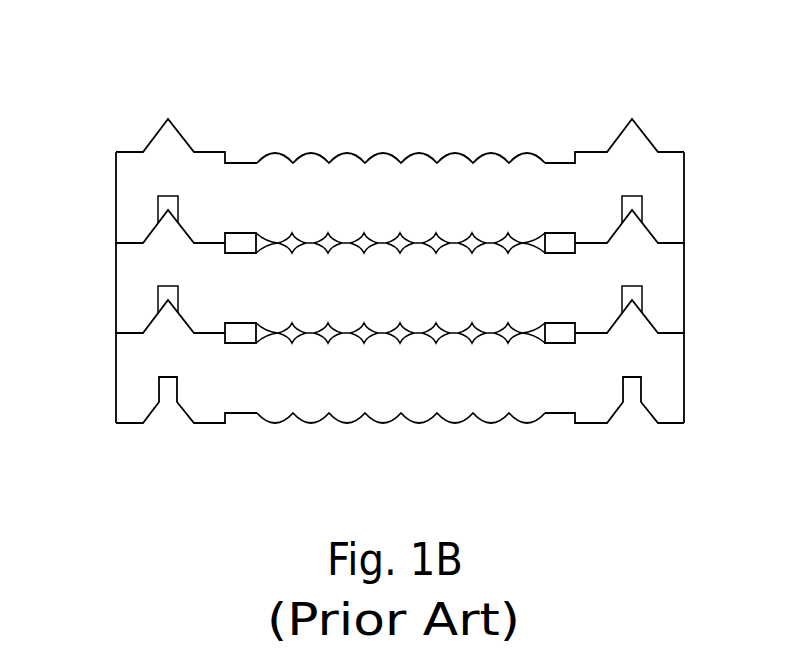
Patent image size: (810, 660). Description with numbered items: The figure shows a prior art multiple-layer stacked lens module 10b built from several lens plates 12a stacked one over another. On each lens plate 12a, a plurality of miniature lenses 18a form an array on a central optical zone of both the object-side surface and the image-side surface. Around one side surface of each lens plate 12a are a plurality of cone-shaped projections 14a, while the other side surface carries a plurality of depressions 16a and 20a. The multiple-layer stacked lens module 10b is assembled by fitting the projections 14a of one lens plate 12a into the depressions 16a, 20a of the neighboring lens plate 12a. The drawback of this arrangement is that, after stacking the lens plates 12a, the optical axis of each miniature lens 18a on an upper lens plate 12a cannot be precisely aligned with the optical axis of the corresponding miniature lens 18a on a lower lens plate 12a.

The multiple-layer stacked lens module 10b is at (402, 255).
The lens plate 12a is at (402, 272).
The cone-shaped projection 14a is at (415, 280).
The depression 16a is at (184, 414).
The miniature lens 18a is at (277, 411).
The depression 20a is at (167, 204).